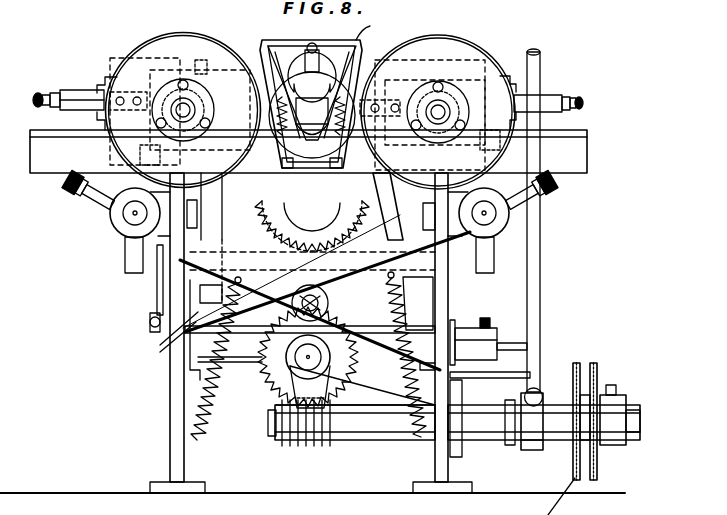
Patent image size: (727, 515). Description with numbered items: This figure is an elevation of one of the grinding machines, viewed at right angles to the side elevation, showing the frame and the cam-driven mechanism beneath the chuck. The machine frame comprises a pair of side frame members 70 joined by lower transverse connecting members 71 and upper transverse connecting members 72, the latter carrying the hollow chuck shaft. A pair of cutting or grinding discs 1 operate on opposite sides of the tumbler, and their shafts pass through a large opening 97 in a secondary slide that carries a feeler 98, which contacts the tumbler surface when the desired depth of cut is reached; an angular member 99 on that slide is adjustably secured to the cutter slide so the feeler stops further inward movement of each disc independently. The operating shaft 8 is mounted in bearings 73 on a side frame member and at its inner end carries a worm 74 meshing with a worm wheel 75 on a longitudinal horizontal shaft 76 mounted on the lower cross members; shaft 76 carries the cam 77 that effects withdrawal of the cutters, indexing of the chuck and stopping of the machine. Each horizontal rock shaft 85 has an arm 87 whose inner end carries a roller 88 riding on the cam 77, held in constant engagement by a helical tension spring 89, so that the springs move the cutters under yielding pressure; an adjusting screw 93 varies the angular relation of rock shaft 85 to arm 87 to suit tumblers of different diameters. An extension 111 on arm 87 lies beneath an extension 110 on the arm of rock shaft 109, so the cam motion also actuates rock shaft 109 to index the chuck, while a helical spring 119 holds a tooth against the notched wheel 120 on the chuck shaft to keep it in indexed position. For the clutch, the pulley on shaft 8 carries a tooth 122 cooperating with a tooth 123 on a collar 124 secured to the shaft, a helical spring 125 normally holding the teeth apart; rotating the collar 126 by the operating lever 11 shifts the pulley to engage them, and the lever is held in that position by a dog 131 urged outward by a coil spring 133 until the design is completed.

The cutting or grinding disc 1 is at (171, 34).
The shaft 8 is at (512, 445).
The operating lever 11 is at (541, 282).
The side frame member 70 is at (170, 412).
The lower transverse connecting member 71 is at (262, 352).
The upper transverse connecting member 72 is at (250, 180).
The bearing 73 is at (393, 430).
The worm 74 is at (300, 443).
The worm wheel 75 is at (300, 362).
The longitudinal horizontal shaft 76 is at (290, 385).
The cam 77 is at (340, 393).
The rock shaft 85 is at (130, 218).
The arm 87 is at (195, 268).
The roller 88 is at (328, 297).
The helical tension spring 89 is at (212, 416).
The adjusting screw 93 is at (72, 215).
The opening 97 is at (163, 107).
The feeler 98 is at (462, 112).
The angular member 99 is at (75, 90).
The rock shaft 109 is at (290, 236).
The extension 110 is at (170, 338).
The extension 111 is at (172, 352).
The helical spring 119 is at (392, 232).
The notched wheel 120 is at (390, 204).
The tooth 122 is at (625, 416).
The tooth 123 is at (598, 445).
The collar 124 is at (620, 398).
The helical spring 125 is at (597, 400).
The collar 126 is at (545, 400).
The dog 131 is at (518, 340).
The coil spring 133 is at (484, 320).